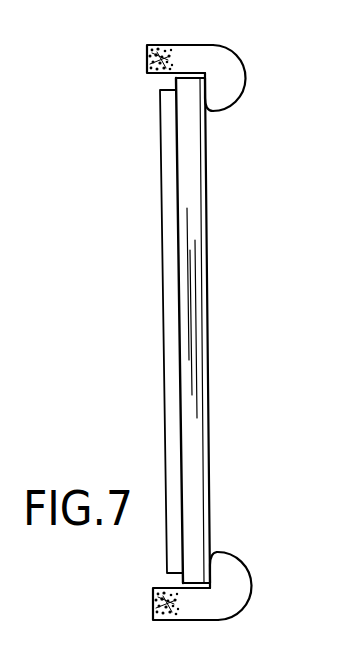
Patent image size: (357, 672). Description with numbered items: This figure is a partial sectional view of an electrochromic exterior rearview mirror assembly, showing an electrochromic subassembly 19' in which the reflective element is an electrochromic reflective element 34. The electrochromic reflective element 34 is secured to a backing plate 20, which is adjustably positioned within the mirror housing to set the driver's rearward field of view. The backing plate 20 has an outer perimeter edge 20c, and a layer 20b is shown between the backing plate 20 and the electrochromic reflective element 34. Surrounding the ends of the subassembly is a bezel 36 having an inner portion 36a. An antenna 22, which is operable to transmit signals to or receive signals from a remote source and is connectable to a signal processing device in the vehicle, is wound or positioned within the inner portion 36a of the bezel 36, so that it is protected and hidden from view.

The electrochromic subassembly 19' is at (272, 309).
The backing plate 20 is at (167, 295).
The intermediate layer 20b is at (163, 228).
The outer perimeter edge 20c is at (160, 113).
The antenna 22 is at (150, 43).
The electrochromic reflective element 34 is at (190, 160).
The bezel 36 is at (228, 62).
The inner portion of bezel 36a is at (183, 50).